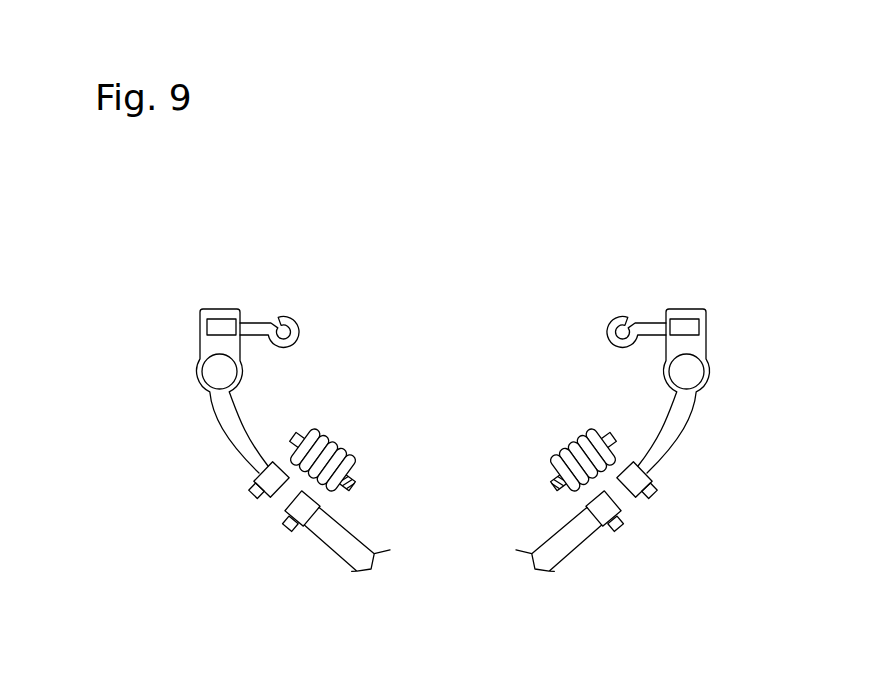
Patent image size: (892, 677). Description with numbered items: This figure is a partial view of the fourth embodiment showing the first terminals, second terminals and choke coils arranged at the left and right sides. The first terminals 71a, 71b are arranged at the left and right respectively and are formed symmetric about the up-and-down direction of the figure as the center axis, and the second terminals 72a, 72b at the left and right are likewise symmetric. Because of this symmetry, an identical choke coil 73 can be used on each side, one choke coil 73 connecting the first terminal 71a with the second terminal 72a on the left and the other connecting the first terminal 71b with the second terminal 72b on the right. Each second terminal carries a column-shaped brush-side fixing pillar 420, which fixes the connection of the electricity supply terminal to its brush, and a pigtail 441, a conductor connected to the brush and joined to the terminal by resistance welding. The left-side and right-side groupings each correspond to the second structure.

The pigtail 441 is at (298, 327).
The brush-side fixing pillar 420 is at (213, 366).
The second terminal 72a is at (223, 425).
The second terminal 72b is at (672, 428).
The choke coil 73 is at (572, 447).
The first terminal 71a is at (337, 553).
The first terminal 71b is at (569, 553).